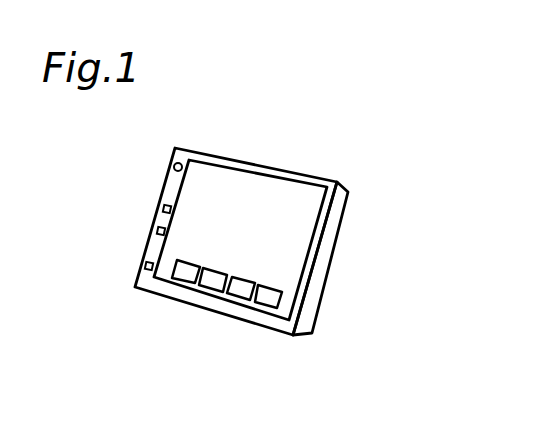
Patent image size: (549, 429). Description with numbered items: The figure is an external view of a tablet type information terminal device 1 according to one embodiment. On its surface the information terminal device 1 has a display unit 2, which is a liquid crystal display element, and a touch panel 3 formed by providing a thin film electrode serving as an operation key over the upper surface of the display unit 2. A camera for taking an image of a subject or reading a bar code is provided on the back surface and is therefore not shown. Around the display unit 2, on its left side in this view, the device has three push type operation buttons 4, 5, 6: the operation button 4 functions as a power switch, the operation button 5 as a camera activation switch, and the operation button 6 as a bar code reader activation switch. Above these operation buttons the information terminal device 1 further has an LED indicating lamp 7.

The information terminal device 1 is at (350, 210).
The display unit 2 is at (260, 205).
The touch panel 3 is at (188, 270).
The operation button 4 is at (146, 264).
The operation button 5 is at (158, 228).
The operation button 6 is at (165, 207).
The LED (indicating lamp) 7 is at (176, 163).